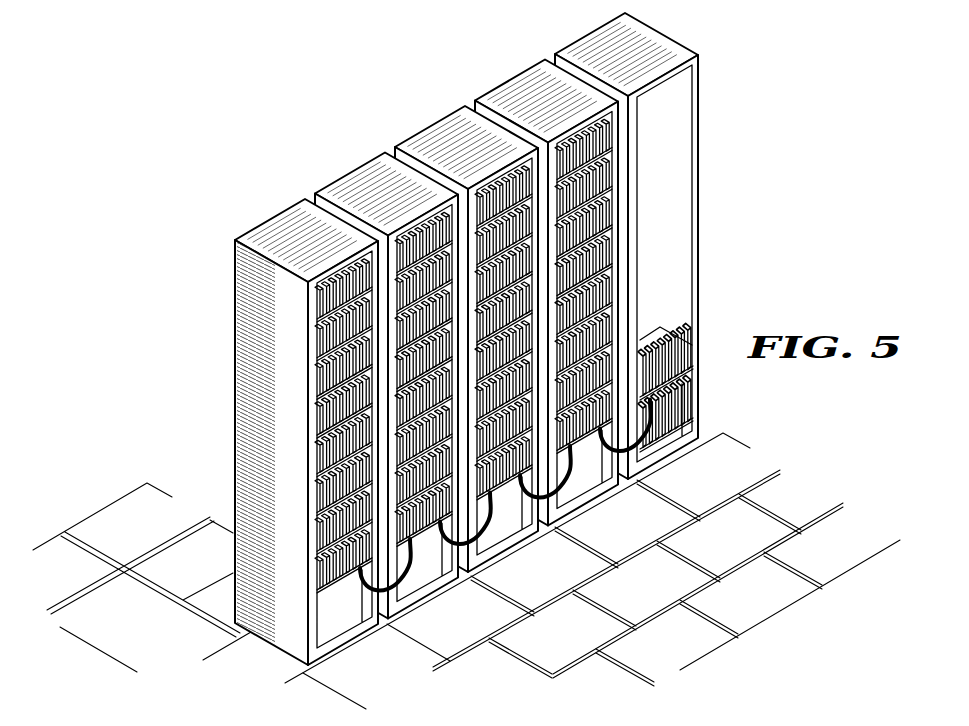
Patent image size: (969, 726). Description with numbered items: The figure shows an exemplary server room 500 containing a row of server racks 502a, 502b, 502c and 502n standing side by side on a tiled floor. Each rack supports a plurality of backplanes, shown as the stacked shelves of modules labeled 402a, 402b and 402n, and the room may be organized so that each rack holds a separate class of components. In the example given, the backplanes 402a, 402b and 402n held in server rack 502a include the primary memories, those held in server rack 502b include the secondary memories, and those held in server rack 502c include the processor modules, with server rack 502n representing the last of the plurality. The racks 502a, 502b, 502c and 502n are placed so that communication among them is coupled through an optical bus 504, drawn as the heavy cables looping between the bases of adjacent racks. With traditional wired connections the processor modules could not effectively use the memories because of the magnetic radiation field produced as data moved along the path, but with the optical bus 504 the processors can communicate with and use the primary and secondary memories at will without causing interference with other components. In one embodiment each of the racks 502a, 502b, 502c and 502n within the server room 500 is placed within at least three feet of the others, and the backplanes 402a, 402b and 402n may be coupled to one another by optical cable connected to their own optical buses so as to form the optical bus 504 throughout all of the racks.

The server room 500 is at (466, 361).
The backplane 402a is at (440, 232).
The backplane 402b is at (430, 275).
The backplane 402n is at (627, 440).
The server rack 502a is at (340, 605).
The server rack 502b is at (423, 338).
The server rack 502c is at (490, 530).
The server rack 502n is at (644, 267).
The optical bus 504 is at (500, 513).